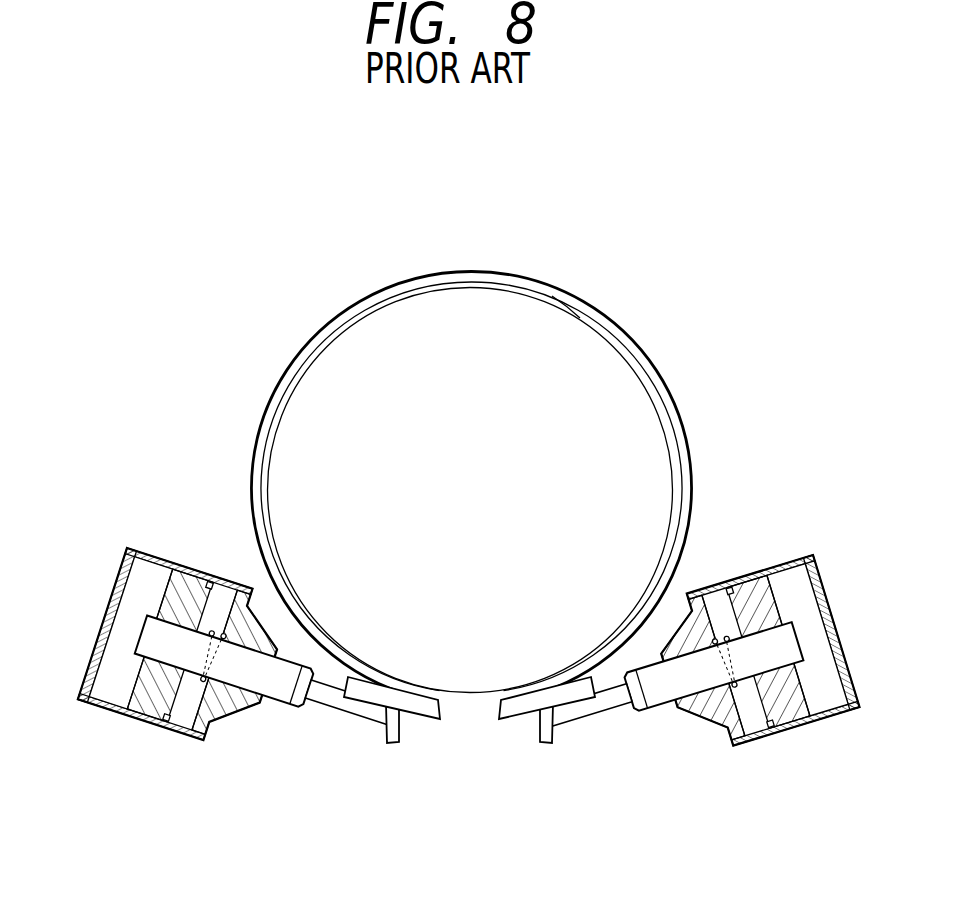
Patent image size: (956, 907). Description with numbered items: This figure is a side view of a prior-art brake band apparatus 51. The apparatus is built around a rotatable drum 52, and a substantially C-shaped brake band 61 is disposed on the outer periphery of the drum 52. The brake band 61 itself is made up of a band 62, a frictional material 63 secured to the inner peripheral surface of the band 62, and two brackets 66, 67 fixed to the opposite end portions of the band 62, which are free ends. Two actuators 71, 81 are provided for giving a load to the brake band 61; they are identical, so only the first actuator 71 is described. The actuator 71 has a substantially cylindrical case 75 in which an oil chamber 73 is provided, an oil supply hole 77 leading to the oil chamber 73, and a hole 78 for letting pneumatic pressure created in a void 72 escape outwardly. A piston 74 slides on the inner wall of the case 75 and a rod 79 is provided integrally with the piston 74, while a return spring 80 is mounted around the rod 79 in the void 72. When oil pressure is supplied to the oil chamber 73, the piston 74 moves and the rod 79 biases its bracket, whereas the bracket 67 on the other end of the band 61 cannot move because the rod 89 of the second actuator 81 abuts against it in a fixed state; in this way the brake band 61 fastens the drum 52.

The brake band apparatus 51 is at (626, 186).
The rotatable drum 52 is at (474, 320).
The brake band 61 is at (694, 401).
The band 62 is at (640, 351).
The frictional material 63 is at (576, 305).
The bracket 66 is at (399, 742).
The bracket 67 is at (541, 742).
The actuator 71 is at (110, 512).
The void 72 is at (187, 718).
The oil chamber 73 is at (140, 588).
The piston 74 is at (153, 702).
The case 75 is at (146, 565).
The oil supply hole 77 is at (96, 703).
The hole 78 is at (208, 722).
The rod 79 is at (340, 706).
The return spring 80 is at (150, 612).
The actuator 81 is at (828, 513).
The rod 89 is at (598, 710).